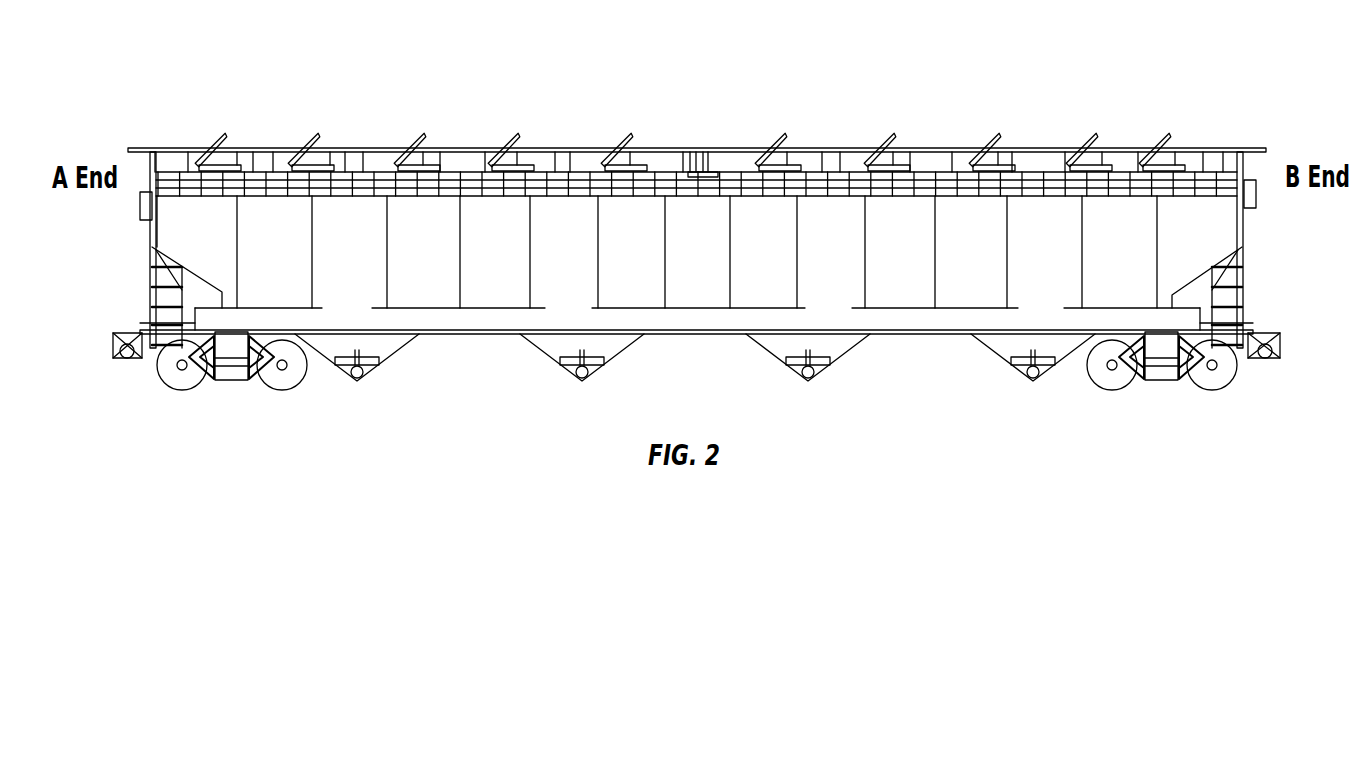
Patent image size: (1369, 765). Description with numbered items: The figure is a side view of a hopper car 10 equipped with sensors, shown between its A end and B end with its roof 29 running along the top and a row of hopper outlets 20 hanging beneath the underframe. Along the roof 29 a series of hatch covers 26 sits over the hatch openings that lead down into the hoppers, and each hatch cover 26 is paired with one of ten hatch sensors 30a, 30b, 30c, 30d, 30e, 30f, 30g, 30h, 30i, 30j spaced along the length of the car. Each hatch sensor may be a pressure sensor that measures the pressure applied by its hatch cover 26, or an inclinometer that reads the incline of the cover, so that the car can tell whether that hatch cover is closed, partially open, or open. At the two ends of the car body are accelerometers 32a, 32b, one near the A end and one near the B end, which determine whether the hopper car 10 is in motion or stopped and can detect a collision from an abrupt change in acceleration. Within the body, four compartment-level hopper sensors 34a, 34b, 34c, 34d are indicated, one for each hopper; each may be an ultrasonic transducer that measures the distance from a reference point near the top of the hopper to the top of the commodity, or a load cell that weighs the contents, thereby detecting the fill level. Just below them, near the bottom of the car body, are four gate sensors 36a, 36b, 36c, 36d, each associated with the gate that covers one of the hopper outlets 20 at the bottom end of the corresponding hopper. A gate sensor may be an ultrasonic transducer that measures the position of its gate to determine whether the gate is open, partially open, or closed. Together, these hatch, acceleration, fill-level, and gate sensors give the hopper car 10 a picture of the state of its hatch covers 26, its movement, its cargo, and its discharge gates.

The hopper car 10 is at (183, 60).
The hopper outlet 20 is at (388, 357).
The hatch cover 26 is at (238, 150).
The roof 29 is at (166, 150).
The hatch sensor 30a is at (218, 132).
The hatch sensor 30b is at (311, 132).
The hatch sensor 30c is at (417, 132).
The hatch sensor 30d is at (511, 132).
The hatch sensor 30e is at (624, 132).
The hatch sensor 30f is at (778, 132).
The hatch sensor 30g is at (887, 132).
The hatch sensor 30h is at (992, 132).
The hatch sensor 30i is at (1089, 132).
The hatch sensor 30j is at (1162, 132).
The accelerometer 32a is at (140, 207).
The accelerometer 32b is at (1258, 192).
The hopper sensor 34a is at (368, 277).
The hopper sensor 34b is at (588, 277).
The hopper sensor 34c is at (849, 277).
The hopper sensor 34d is at (1061, 277).
The gate sensor 36a is at (368, 323).
The gate sensor 36b is at (589, 323).
The gate sensor 36c is at (849, 323).
The gate sensor 36d is at (1061, 323).